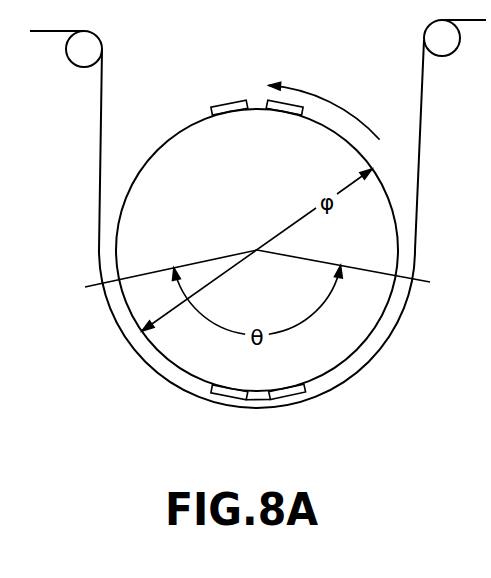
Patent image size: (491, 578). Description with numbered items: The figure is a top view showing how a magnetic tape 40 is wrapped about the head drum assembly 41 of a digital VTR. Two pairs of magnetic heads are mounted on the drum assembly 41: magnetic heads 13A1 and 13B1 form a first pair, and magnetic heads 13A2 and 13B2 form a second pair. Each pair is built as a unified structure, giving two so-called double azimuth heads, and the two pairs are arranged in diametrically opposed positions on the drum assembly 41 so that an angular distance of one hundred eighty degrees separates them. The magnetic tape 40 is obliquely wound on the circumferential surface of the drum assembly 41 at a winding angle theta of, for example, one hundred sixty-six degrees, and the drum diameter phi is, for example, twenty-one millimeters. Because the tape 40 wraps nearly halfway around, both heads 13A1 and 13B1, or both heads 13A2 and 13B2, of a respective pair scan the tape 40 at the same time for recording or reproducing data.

The magnetic tape 40 is at (419, 181).
The drum assembly 41 is at (203, 119).
The magnetic head 13A1 is at (235, 402).
The magnetic head 13B1 is at (301, 401).
The magnetic head 13A2 is at (296, 101).
The magnetic head 13B2 is at (237, 99).